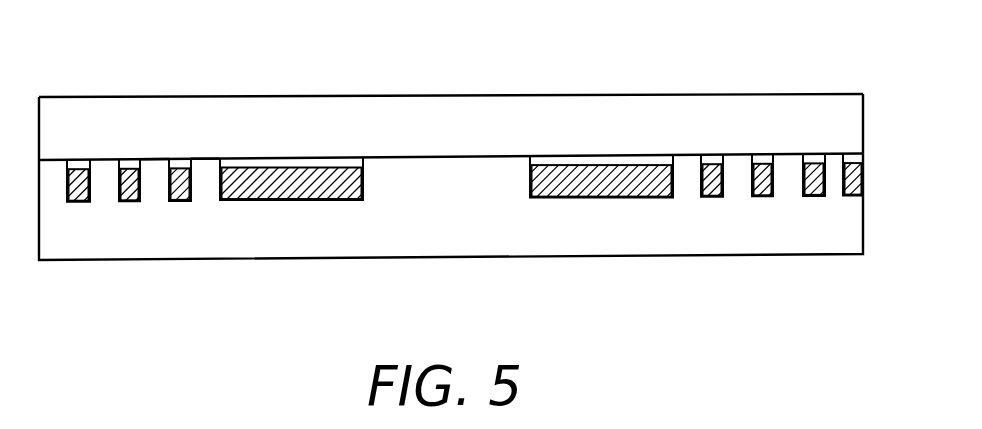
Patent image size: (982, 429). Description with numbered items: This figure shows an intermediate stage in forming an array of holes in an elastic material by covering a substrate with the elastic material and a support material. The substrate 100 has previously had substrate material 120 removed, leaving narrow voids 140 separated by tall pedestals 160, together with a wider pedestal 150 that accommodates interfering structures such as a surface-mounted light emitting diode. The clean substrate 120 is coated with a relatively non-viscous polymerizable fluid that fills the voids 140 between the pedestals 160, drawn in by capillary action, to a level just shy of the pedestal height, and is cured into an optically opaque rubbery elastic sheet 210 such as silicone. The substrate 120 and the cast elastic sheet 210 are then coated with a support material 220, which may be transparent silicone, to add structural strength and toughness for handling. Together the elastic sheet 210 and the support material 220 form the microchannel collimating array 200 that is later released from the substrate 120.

The substrate 100 is at (633, 265).
The substrate material 120 is at (95, 245).
The voids 140 is at (129, 200).
The wider pedestal 150 is at (456, 170).
The pedestals 160 is at (158, 183).
The microchannel collimating array 200 is at (630, 77).
The elastic sheet 210 is at (242, 163).
The support material 220 is at (367, 95).